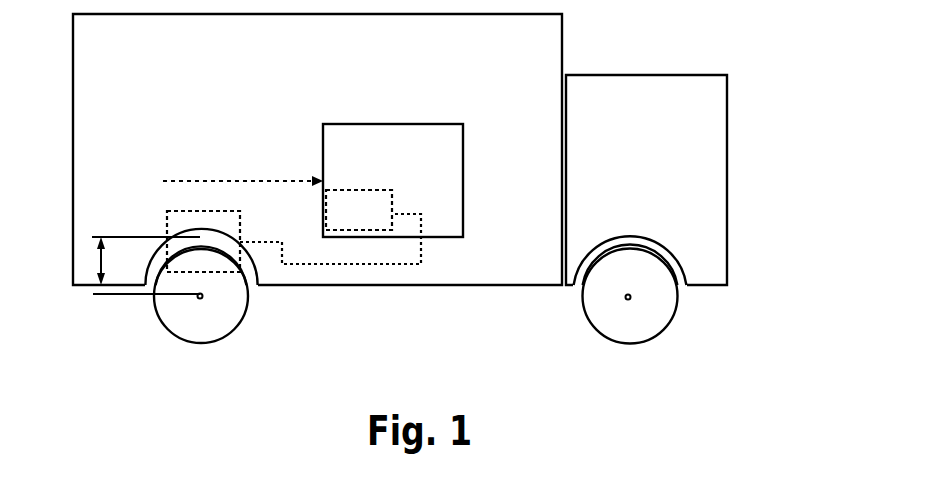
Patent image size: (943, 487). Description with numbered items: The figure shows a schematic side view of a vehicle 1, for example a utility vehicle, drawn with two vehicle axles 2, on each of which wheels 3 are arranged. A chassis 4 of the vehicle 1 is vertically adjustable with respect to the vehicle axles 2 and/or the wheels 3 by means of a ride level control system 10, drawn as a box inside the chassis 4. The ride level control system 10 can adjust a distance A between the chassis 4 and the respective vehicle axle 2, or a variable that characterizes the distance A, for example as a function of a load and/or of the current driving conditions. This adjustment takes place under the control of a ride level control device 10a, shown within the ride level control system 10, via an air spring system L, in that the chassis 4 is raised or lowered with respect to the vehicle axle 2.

The vehicle 1 is at (406, 228).
The vehicle axle 2 is at (203, 310).
The wheels 3 is at (166, 340).
The chassis 4 is at (323, 291).
The ride level control system 10 is at (412, 178).
The ride level control device 10a is at (387, 228).
The distance A is at (110, 264).
The air spring system L is at (203, 272).